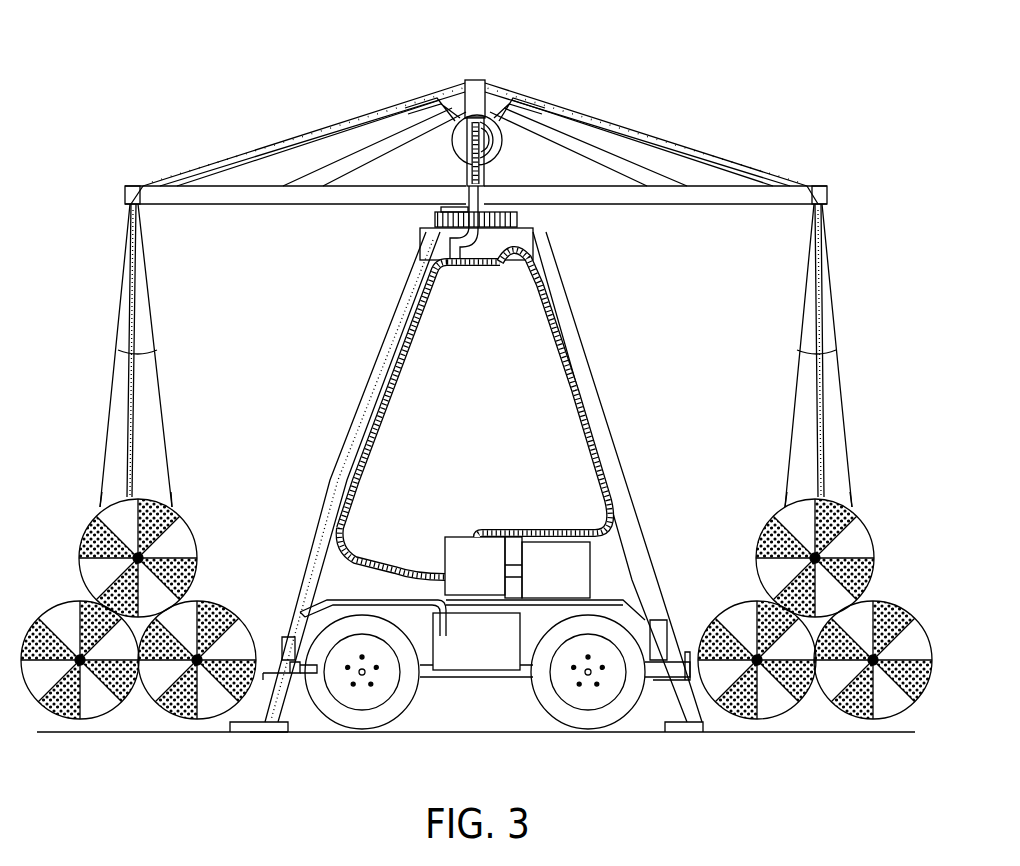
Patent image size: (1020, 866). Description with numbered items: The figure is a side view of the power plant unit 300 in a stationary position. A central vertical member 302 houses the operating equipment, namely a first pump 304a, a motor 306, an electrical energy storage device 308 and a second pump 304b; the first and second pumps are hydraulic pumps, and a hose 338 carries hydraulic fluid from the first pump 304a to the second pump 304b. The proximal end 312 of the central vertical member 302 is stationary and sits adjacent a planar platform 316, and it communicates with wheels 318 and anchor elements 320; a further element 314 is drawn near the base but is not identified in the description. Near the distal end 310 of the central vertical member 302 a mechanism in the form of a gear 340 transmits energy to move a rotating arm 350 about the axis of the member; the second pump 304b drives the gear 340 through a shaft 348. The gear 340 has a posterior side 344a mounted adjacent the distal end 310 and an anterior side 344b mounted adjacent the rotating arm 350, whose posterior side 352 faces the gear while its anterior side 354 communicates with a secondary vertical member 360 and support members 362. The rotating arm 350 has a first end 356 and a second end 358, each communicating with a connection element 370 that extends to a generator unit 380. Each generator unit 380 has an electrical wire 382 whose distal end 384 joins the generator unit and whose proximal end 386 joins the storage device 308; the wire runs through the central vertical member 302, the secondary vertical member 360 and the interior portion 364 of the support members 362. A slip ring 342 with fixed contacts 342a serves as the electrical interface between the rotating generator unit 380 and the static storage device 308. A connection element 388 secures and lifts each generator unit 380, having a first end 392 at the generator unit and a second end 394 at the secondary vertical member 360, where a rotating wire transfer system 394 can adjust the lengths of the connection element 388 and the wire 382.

The power plant unit 300 is at (203, 84).
The central vertical member 302 is at (612, 450).
The first pump 304a is at (445, 540).
The second pump 304b is at (548, 272).
The motor 306 is at (548, 531).
The electrical energy storage device 308 is at (517, 678).
The distal end 310 is at (410, 250).
The proximal end 312 is at (280, 733).
The mounting bracket 314 is at (283, 637).
The planar platform 316 is at (808, 734).
The wheels 318 is at (357, 730).
The anchor elements 320 is at (255, 722).
The hose 338 is at (383, 423).
The gear 340 is at (437, 220).
The slip ring 342 is at (460, 268).
The fixed contacts 342a is at (487, 160).
The posterior side 344a is at (488, 270).
The anterior side 344b is at (440, 207).
The shaft 348 is at (533, 235).
The rotating arm 350 is at (258, 206).
The posterior side 352 is at (300, 206).
The anterior side 354 is at (267, 186).
The first end 356 is at (125, 190).
The second end 358 is at (827, 190).
The secondary vertical member 360 is at (453, 133).
The support members 362 is at (267, 184).
The interior portion 364 is at (350, 118).
The connection element 370 is at (128, 204).
The generator unit 380 is at (90, 520).
The electrical wire 382 is at (385, 340).
The distal end 384 is at (128, 497).
The proximal end 386 is at (437, 678).
The connection element 388 is at (150, 348).
The first end 392 is at (98, 513).
The second end 394 is at (512, 160).